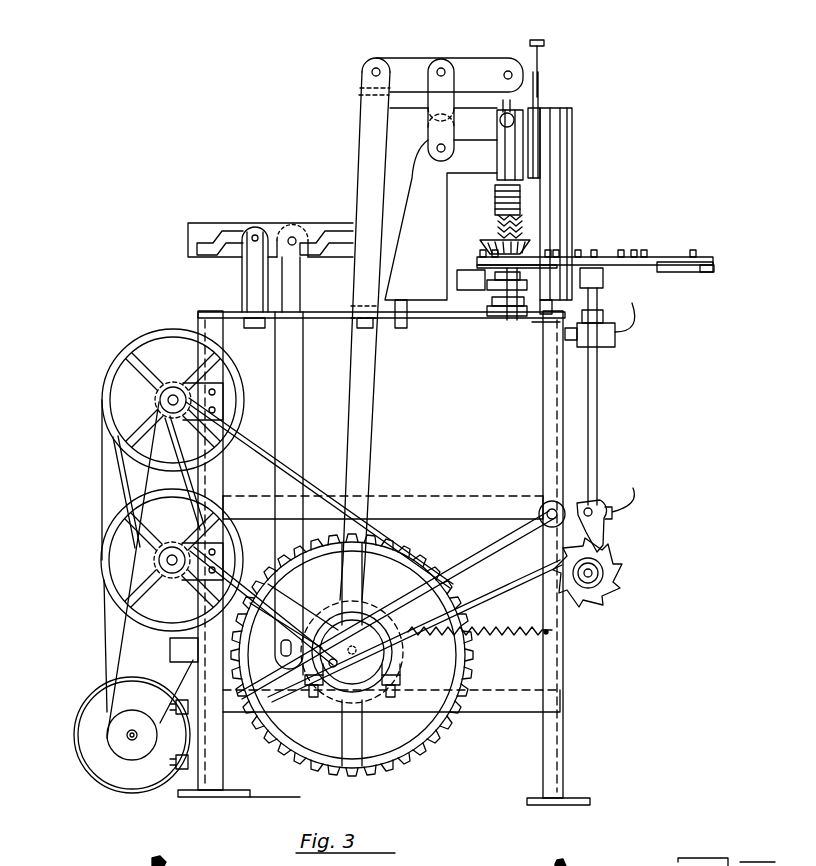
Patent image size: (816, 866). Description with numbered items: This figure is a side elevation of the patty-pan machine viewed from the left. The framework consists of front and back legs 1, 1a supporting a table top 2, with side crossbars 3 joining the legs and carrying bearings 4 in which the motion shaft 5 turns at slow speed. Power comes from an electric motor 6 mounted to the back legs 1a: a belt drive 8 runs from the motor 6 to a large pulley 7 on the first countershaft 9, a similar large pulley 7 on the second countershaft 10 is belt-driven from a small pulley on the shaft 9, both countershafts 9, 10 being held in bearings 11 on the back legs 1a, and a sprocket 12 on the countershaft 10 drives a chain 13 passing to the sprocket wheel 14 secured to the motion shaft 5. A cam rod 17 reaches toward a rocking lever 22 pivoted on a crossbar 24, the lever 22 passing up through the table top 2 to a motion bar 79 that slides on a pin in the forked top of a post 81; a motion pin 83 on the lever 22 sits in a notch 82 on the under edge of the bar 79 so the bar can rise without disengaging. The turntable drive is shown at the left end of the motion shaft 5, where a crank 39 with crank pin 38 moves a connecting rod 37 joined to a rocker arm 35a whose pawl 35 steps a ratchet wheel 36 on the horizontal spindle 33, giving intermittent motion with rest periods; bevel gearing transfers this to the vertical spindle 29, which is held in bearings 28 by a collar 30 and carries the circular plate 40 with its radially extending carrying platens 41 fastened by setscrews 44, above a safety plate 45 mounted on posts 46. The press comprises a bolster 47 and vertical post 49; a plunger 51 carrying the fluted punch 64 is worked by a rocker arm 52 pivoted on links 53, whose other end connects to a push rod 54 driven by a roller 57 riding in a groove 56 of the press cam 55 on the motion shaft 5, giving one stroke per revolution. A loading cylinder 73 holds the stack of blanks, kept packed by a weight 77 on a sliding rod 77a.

The front legs 1 is at (562, 750).
The back legs 1a is at (182, 797).
The table top 2 is at (330, 320).
The crossbars 3 is at (490, 712).
The bearings 4 is at (395, 678).
The motion shaft 5 is at (362, 650).
The electric motor 6 is at (82, 756).
The large pulley 7 is at (103, 404).
The belt drive 8 is at (120, 474).
The first countershaft 9 is at (165, 565).
The second countershaft 10 is at (168, 404).
The bearings 11 is at (160, 398).
The sprocket 12 is at (171, 383).
The chain 13 is at (326, 490).
The sprocket wheel 14 is at (420, 735).
The cam rod 17 is at (170, 650).
The rocking lever 22 is at (290, 385).
The crossbar 24 is at (440, 507).
The bearings 28 is at (620, 338).
The vertical spindle 29 is at (600, 424).
The collar 30 is at (605, 316).
The horizontal spindle 33 is at (600, 573).
The pawl 35 is at (607, 534).
The rocker arm 35a is at (616, 512).
The ratchet wheel 36 is at (612, 592).
The connecting rod 37 is at (525, 560).
The crank pin 38 is at (388, 730).
The crank 39 is at (272, 735).
The circular plate 40 is at (612, 256).
The carrying platens 41 is at (712, 262).
The setscrews 44 is at (665, 255).
The plate 45 is at (700, 274).
The posts 46 is at (538, 312).
The bolster 47 is at (470, 300).
The vertical post 49 is at (424, 282).
The plunger 51 is at (540, 100).
The rocker arm 52 is at (490, 80).
The links 53 is at (437, 70).
The push rod 54 is at (368, 375).
The press cam 55 is at (337, 600).
The groove 56 is at (330, 728).
The roller 57 is at (362, 598).
The punch 64 is at (532, 246).
The cylinder 73 is at (578, 166).
The weight 77 is at (665, 856).
The rod 77a is at (168, 862).
The motion bar 79 is at (188, 238).
The post 81 is at (242, 288).
The notch 82 is at (296, 250).
The motion pin 83 is at (292, 232).